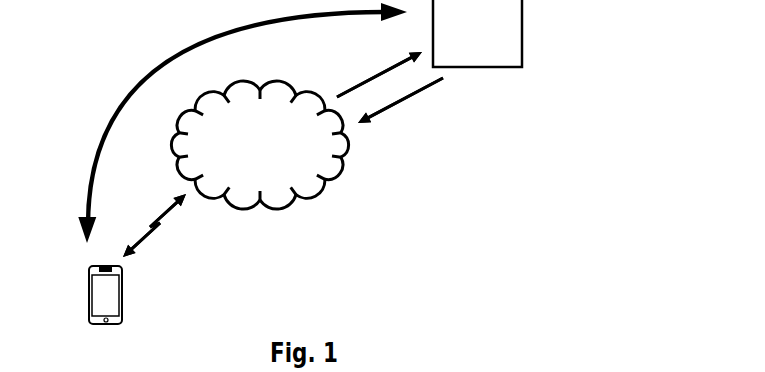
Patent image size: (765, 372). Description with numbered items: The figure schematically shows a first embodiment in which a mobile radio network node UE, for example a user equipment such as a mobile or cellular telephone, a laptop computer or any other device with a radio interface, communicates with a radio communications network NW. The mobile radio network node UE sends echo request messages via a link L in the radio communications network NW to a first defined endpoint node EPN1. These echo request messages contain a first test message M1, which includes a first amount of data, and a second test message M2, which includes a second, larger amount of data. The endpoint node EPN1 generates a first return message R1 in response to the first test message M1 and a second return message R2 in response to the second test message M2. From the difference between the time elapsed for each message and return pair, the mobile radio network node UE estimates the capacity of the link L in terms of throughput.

The link L is at (170, 60).
The first test message M1 is at (281, 122).
The second test message M2 is at (263, 135).
The first return message R1 is at (283, 185).
The second return message R2 is at (283, 171).
The first defined endpoint node EPN1 is at (521, 33).
The mobile radio network node UE is at (106, 314).
The radio communications network NW is at (307, 192).